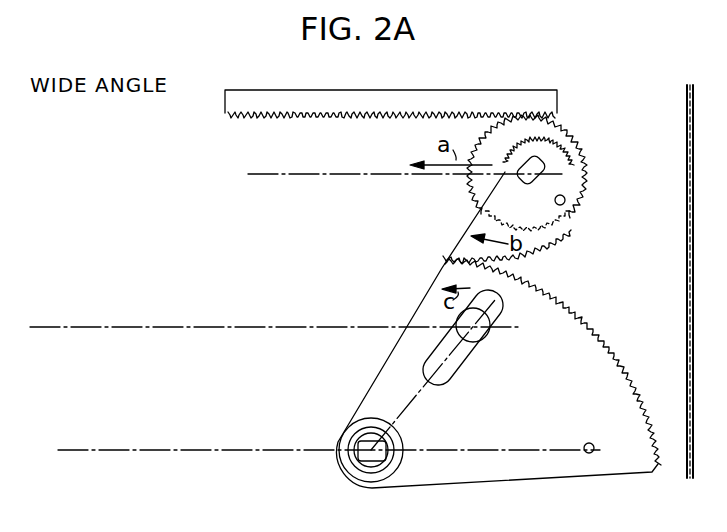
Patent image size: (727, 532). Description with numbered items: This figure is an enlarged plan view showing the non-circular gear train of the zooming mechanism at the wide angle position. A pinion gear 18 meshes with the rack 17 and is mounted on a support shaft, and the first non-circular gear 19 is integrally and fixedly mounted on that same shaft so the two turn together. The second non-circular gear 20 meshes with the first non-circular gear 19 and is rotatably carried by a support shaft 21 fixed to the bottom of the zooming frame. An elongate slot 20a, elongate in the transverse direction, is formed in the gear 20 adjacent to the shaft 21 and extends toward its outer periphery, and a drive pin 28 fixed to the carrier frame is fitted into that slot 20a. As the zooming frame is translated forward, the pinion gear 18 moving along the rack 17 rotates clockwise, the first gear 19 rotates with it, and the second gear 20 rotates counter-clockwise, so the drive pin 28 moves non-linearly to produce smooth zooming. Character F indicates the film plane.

The rack 17 is at (345, 96).
The pinion gear 18 is at (483, 187).
The first non-circular gear 19 is at (563, 236).
The second non-circular gear 20 is at (568, 327).
The elongate slot 20a is at (452, 362).
The support shaft 21 is at (366, 453).
The drive pin 28 is at (480, 333).
The film plane F is at (687, 130).